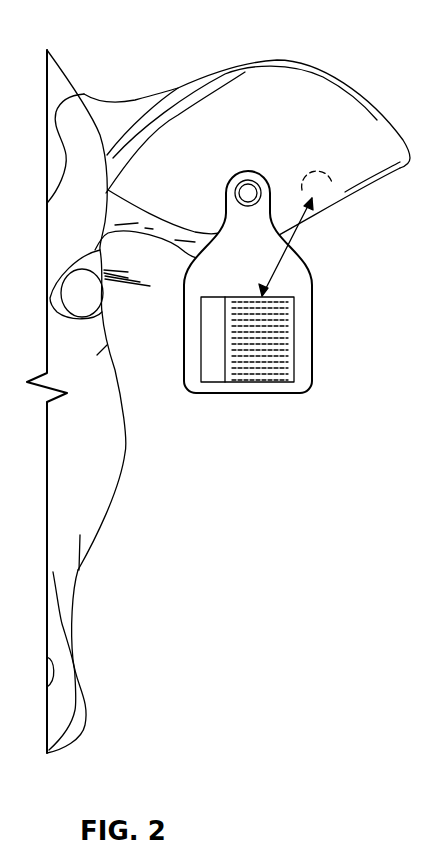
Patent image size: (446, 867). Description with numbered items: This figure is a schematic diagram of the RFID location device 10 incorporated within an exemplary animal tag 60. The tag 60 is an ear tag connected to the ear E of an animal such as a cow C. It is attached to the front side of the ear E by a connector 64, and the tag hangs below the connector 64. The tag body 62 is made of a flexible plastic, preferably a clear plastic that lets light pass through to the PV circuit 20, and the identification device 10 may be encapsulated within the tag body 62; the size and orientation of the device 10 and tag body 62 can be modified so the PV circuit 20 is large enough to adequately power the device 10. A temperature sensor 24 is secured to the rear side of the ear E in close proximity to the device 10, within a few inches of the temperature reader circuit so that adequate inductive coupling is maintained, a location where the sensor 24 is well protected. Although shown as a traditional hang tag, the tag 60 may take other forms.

The cow C is at (66, 88).
The ear E is at (327, 97).
The RFID location device 10 is at (222, 388).
The PV circuit 20 is at (269, 383).
The temperature sensor 24 is at (316, 194).
The animal tag 60 is at (292, 295).
The tag body 62 is at (260, 266).
The connector 64 is at (246, 192).